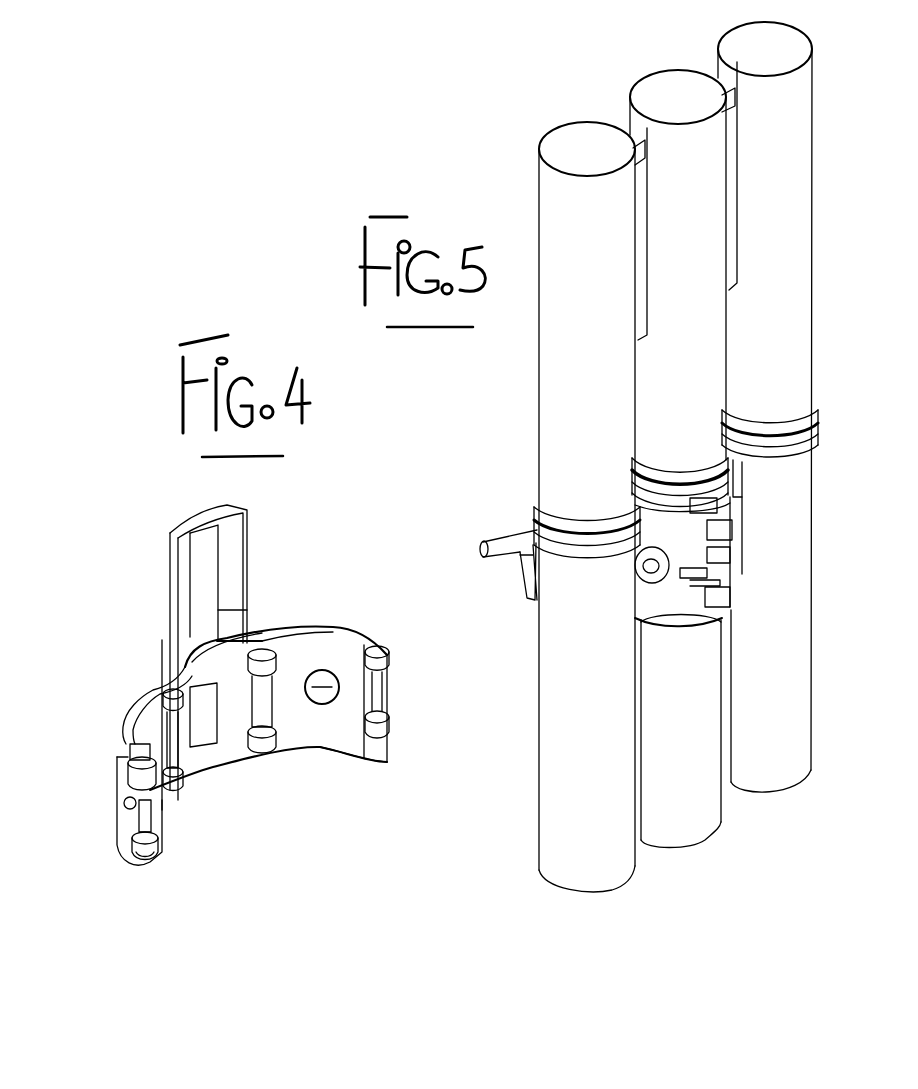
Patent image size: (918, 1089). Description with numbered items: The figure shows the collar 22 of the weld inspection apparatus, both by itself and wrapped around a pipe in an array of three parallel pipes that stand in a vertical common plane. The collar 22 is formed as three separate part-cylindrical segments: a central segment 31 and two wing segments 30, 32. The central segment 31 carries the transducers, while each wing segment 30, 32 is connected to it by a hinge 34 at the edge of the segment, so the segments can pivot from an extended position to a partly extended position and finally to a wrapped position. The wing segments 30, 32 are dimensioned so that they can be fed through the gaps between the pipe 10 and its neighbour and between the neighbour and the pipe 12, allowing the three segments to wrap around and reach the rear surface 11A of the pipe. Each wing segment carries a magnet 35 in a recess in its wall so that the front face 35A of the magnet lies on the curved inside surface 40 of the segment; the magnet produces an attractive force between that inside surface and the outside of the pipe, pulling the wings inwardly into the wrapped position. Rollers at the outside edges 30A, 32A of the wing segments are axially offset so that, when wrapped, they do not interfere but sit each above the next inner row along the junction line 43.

In FIG. 5, the pipe 10 is at (560, 400).
In FIG. 5, the rear surface of the pipe 11A is at (705, 380).
In FIG. 5, the pipe 12 is at (760, 407).
In FIG. 4, the collar 22 is at (128, 568).
In FIG. 4, the wing segment 30 is at (350, 560).
In FIG. 5, the wing segment 30 is at (726, 572).
In FIG. 4, the outside edge of wing segment 30A is at (372, 758).
In FIG. 4, the central segment 31 is at (168, 638).
In FIG. 4, the wing segment 32 is at (124, 702).
In FIG. 5, the wing segment 32 is at (670, 600).
In FIG. 4, the outside edge of wing segment 32A is at (150, 821).
In FIG. 4, the hinge 34 is at (260, 648).
In FIG. 4, the magnet 35 is at (326, 704).
In FIG. 4, the front face of the magnet 35A is at (339, 684).
In FIG. 4, the curved inside surface 40 is at (345, 653).
In FIG. 5, the junction line 43 is at (702, 460).